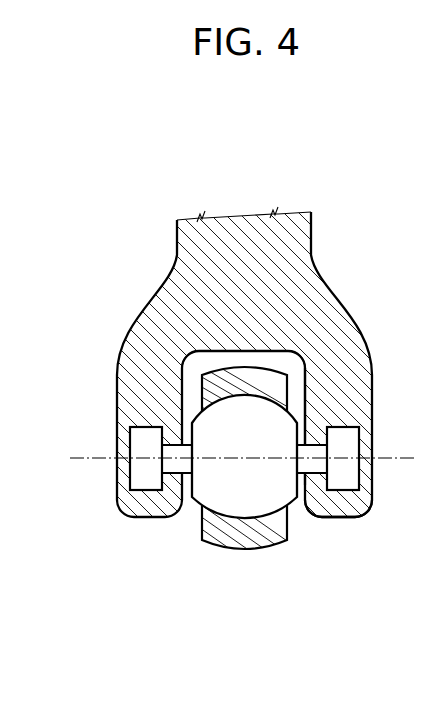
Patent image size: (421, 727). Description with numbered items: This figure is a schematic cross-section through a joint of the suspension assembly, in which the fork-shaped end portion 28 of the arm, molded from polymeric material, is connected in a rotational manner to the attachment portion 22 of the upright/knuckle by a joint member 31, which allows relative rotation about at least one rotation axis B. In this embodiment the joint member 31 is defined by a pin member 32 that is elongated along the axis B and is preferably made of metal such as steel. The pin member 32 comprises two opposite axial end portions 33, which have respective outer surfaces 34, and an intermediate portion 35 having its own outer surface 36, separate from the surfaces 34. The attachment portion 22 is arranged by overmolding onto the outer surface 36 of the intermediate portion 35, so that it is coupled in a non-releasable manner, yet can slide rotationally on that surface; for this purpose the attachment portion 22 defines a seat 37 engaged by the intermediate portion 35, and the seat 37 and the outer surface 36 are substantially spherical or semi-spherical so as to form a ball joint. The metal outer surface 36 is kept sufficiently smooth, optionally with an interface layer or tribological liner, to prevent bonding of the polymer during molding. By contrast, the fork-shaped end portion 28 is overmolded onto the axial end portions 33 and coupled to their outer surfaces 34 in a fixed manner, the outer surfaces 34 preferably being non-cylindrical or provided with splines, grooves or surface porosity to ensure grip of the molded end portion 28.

The attachment portion 22 is at (255, 548).
The end portion 28 is at (205, 276).
The joint member 31 is at (353, 496).
The pin member 32 is at (340, 421).
The axial end portions 33 is at (142, 482).
The outer surfaces 34 is at (144, 418).
The intermediate portion 35 is at (313, 433).
The outer surface 36 is at (232, 386).
The seat 37 is at (217, 411).
The rotation axis B is at (87, 452).